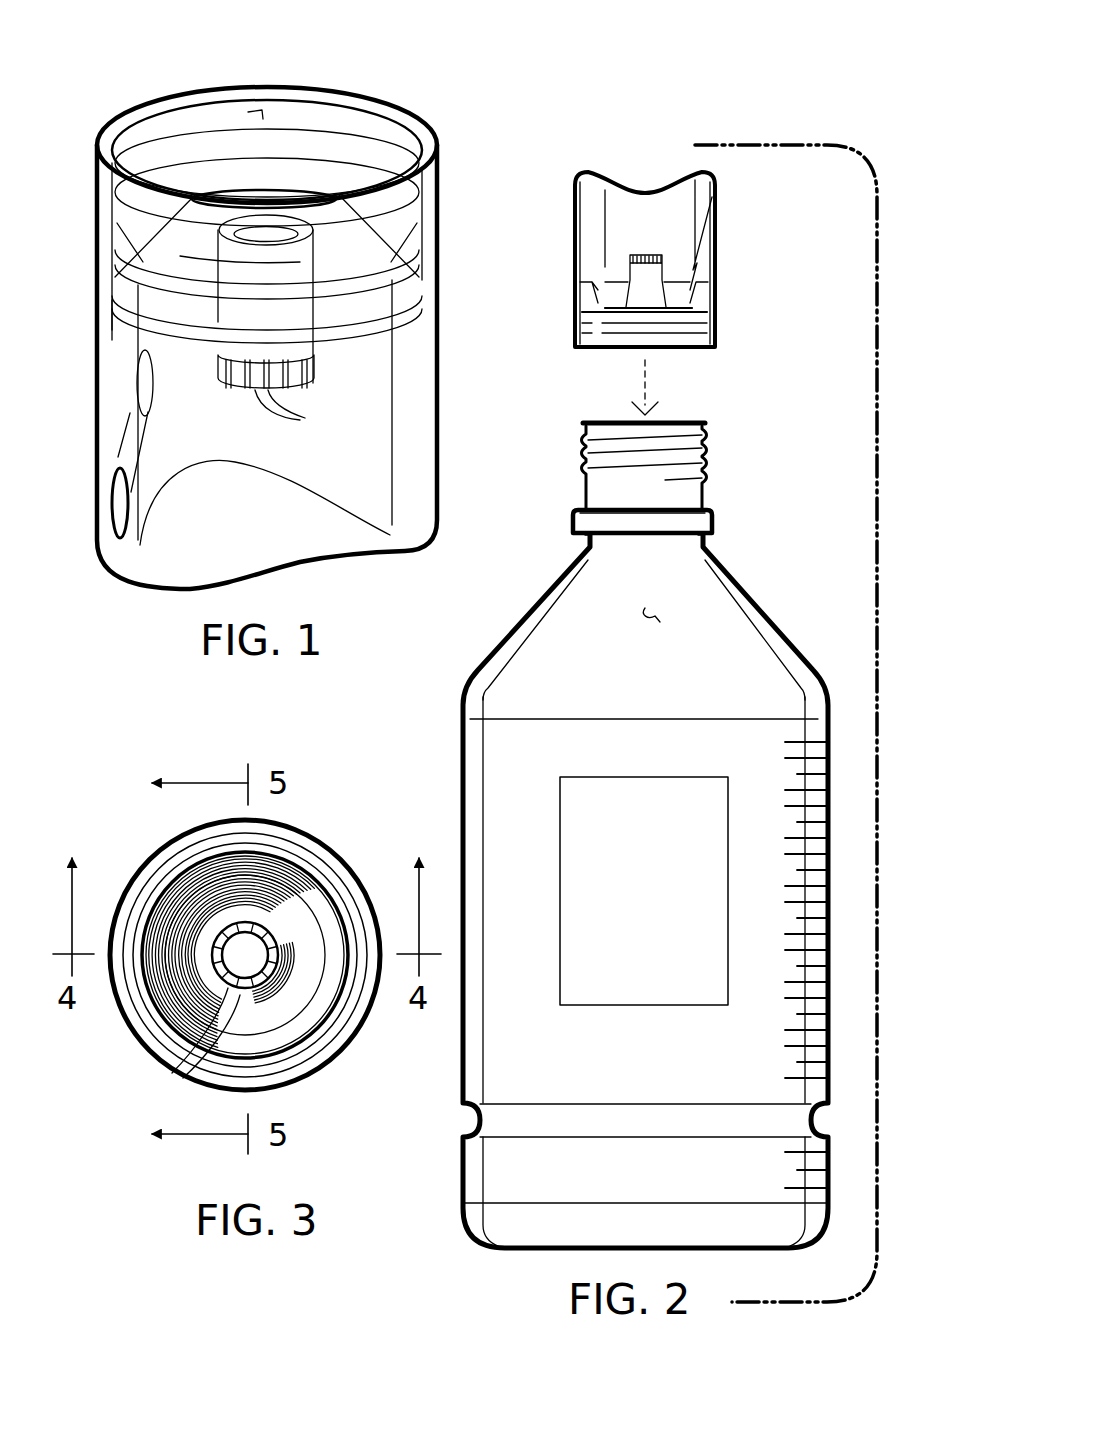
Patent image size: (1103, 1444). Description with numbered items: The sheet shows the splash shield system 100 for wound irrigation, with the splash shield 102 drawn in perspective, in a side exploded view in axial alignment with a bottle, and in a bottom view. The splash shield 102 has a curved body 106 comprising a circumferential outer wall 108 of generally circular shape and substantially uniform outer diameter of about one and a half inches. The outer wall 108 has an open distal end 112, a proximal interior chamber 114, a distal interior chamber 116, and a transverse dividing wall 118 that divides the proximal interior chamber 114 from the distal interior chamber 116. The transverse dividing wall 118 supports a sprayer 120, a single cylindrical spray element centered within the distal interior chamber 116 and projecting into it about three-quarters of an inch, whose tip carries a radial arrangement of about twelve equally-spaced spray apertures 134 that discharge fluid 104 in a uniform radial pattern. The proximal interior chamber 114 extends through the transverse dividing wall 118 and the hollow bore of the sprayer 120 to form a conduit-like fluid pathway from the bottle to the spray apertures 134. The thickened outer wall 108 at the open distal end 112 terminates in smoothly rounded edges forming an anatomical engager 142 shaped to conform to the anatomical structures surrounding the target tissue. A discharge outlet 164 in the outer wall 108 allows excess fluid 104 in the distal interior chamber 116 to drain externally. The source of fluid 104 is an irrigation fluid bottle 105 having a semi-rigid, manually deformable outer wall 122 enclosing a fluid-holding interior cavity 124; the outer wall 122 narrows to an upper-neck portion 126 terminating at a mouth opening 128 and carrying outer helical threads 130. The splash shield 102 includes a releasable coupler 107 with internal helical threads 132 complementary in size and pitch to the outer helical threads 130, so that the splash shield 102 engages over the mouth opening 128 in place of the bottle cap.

In FIG. 1, the splash shield system 100 is at (155, 85).
In FIG. 1, the splash shield 102 is at (86, 126).
In FIG. 2, the splash shield 102 is at (722, 263).
In FIG. 3, the splash shield 102 is at (113, 817).
In FIG. 2, the fluid 104 is at (707, 718).
In FIG. 2, the irrigation fluid bottle 105 is at (551, 592).
In FIG. 3, the curved body 106 is at (130, 1049).
In FIG. 1, the releasable coupler 107 is at (380, 132).
In FIG. 2, the releasable coupler 107 is at (709, 350).
In FIG. 1, the circumferential outer wall 108 is at (425, 347).
In FIG. 3, the circumferential outer wall 108 is at (125, 1023).
In FIG. 1, the open distal end 112 is at (137, 593).
In FIG. 1, the proximal interior chamber 114 is at (262, 110).
In FIG. 1, the distal interior chamber 116 is at (195, 543).
In FIG. 3, the transverse dividing wall 118 is at (287, 1018).
In FIG. 1, the sprayer 120 is at (340, 372).
In FIG. 2, the sprayer 120 is at (630, 258).
In FIG. 3, the sprayer 120 is at (266, 933).
In FIG. 2, the outer wall 122 is at (493, 772).
In FIG. 2, the interior cavity 124 is at (655, 616).
In FIG. 2, the upper-neck portion 126 is at (708, 493).
In FIG. 2, the mouth opening 128 is at (616, 420).
In FIG. 2, the outer helical threads 130 is at (707, 452).
In FIG. 1, the internal helical threads 132 is at (380, 160).
In FIG. 2, the internal helical threads 132 is at (698, 330).
In FIG. 1, the spray apertures 134 is at (302, 420).
In FIG. 3, the spray apertures 134 is at (186, 1080).
In FIG. 1, the anatomical engager 142 is at (118, 578).
In FIG. 3, the anatomical engager 142 is at (355, 1028).
In FIG. 1, the discharge outlet 164 is at (112, 503).